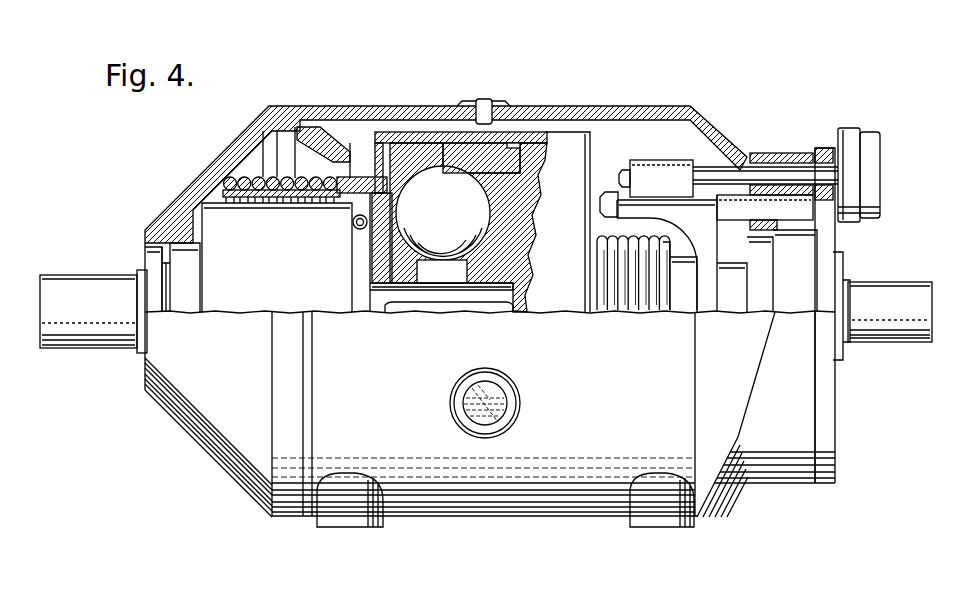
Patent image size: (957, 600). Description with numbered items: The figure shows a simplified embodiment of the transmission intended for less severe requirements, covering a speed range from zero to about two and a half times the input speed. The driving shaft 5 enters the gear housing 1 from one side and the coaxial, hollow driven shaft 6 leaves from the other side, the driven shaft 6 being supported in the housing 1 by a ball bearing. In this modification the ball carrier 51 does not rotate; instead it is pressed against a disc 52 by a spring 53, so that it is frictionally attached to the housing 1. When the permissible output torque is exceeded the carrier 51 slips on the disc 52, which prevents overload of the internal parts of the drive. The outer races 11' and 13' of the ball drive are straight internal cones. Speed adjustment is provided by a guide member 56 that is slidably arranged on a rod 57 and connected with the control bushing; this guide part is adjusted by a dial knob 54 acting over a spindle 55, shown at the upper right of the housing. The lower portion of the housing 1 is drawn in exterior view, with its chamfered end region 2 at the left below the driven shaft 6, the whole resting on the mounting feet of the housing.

The gear housing 1 is at (547, 488).
The housing end wall 2 is at (182, 408).
The driving shaft 5 is at (900, 292).
The driven shaft 6 is at (77, 287).
The outer race 11' is at (482, 115).
The outer race 13' is at (450, 186).
The ball carrier 51 is at (358, 180).
The disc 52 is at (326, 137).
The spring 53 is at (252, 176).
The dial knob 54 is at (865, 133).
The spindle 55 is at (778, 180).
The guide member 56 is at (650, 163).
The rod 57 is at (730, 207).